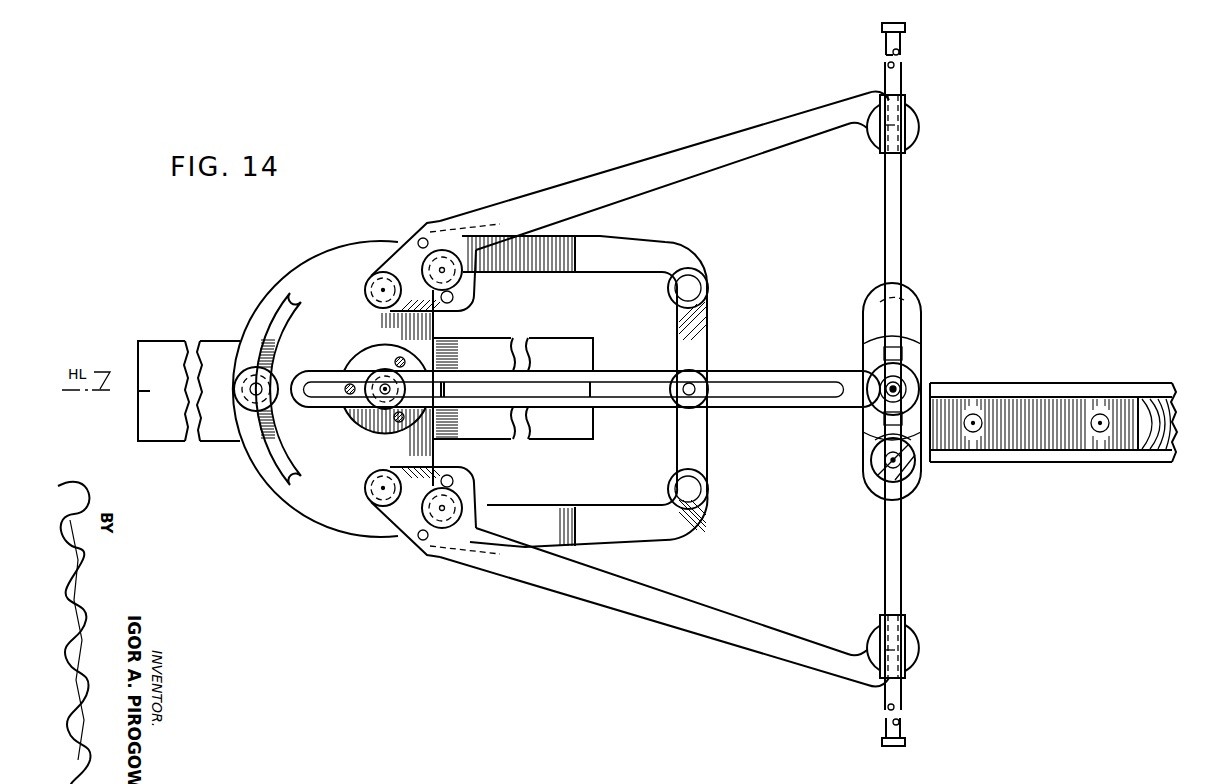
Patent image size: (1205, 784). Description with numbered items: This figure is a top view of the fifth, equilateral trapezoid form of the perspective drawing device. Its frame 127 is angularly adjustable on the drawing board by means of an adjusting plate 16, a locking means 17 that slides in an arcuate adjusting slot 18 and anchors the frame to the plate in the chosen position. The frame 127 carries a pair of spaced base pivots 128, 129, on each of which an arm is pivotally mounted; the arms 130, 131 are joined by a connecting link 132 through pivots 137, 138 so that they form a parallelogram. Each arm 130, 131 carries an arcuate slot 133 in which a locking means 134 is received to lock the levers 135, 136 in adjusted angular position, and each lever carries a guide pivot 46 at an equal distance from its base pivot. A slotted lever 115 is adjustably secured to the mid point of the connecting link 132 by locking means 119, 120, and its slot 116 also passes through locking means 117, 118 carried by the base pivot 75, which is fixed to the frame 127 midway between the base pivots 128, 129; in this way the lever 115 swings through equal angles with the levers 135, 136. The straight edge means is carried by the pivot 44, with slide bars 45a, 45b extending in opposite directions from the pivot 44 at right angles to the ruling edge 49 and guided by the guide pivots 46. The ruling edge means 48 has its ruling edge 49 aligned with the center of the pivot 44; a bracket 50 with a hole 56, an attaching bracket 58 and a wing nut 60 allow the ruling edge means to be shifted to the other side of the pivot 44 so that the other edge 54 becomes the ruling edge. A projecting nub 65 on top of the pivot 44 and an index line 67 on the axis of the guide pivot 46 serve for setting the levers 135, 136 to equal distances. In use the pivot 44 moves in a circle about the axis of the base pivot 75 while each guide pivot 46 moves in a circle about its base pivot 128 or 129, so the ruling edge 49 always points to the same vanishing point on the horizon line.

The adjusting plate 16 is at (163, 441).
The locking means 17 is at (240, 442).
The arcuate adjusting slot 18 is at (298, 473).
The pivot 44 is at (905, 380).
The slide bar 45a is at (902, 229).
The slide bar 45b is at (902, 554).
The guide pivot 46 is at (912, 128).
The ruling edge means 48 is at (1164, 463).
The ruling edge 49 is at (1071, 383).
The bracket 50 is at (871, 441).
The other edge 54 is at (1102, 464).
The hole 56 is at (920, 304).
The attaching bracket 58 is at (1025, 440).
The wing nut 60 is at (875, 462).
The projecting nub 65 is at (880, 404).
The index line 67 is at (897, 119).
The base pivot 75 is at (392, 383).
The slotted lever 115 is at (773, 378).
The slot 116 is at (803, 386).
The locking means 117 is at (383, 383).
The locking means 118 is at (379, 386).
The locking means 119 is at (682, 402).
The locking means 120 is at (688, 381).
The frame 127 is at (346, 264).
The base pivot 128 is at (382, 271).
The base pivot 129 is at (381, 507).
The arm 130 is at (611, 258).
The arm 131 is at (660, 522).
The connecting link 132 is at (697, 350).
The arcuate slot 133 is at (454, 298).
The locking means 134 is at (462, 278).
The lever 135 is at (632, 181).
The lever 136 is at (684, 625).
The pivot 137 is at (700, 283).
The pivot 138 is at (702, 487).